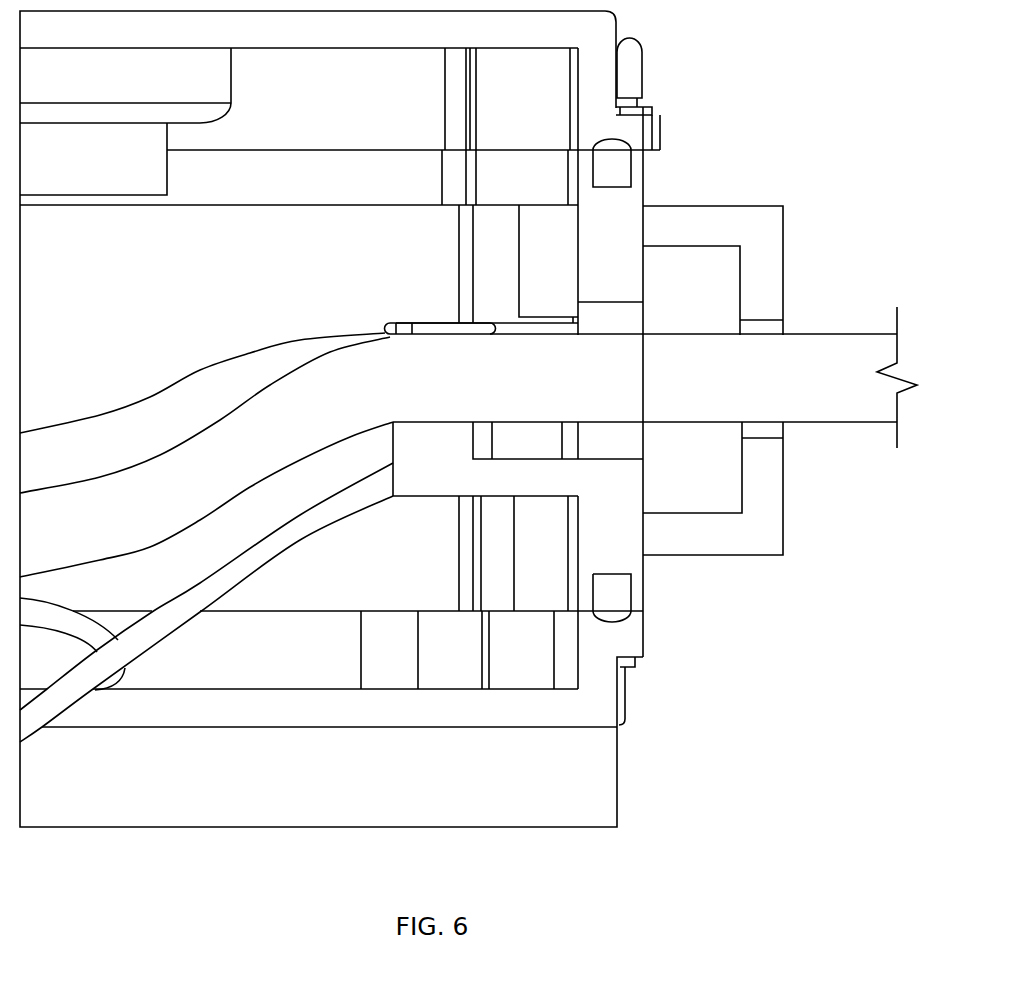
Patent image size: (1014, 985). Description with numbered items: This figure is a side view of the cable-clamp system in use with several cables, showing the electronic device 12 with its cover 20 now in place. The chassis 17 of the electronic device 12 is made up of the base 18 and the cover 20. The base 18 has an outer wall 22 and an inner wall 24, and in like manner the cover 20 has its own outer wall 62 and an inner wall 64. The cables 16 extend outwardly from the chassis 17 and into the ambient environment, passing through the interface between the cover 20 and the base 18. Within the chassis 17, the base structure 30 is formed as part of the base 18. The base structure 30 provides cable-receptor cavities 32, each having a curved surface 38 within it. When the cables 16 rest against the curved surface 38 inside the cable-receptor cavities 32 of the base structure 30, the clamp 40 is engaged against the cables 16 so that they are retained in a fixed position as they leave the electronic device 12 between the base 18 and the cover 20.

The electronic device 12 is at (730, 747).
The cables 16 is at (97, 433).
The chassis 17 is at (793, 278).
The base 18 is at (643, 633).
The cover 20 is at (645, 180).
The outer wall 22 is at (783, 487).
The inner wall 24 is at (643, 437).
The base structure 30 is at (453, 483).
The cable-receptor cavities 32 is at (383, 430).
The curved surface 38 is at (435, 428).
The clamp 40 is at (423, 322).
The outer wall 62 is at (783, 225).
The inner wall 64 is at (645, 260).